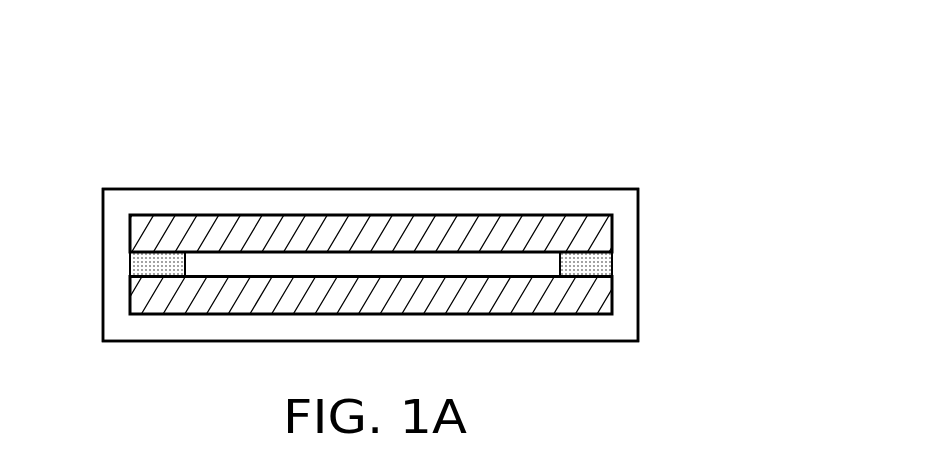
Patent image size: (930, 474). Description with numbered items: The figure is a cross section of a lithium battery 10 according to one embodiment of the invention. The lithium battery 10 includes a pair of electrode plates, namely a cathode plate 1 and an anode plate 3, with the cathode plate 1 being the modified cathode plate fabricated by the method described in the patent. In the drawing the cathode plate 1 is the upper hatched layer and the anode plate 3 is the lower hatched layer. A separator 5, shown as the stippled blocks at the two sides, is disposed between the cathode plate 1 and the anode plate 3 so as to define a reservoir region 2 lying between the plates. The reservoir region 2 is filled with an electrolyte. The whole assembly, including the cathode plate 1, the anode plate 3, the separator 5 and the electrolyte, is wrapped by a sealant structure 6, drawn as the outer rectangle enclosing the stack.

The lithium battery 10 is at (648, 98).
The sealant structure 6 is at (370, 189).
The cathode plate 1 is at (612, 220).
The reservoir region 2 is at (516, 251).
The anode plate 3 is at (612, 305).
The separator 5 is at (130, 262).